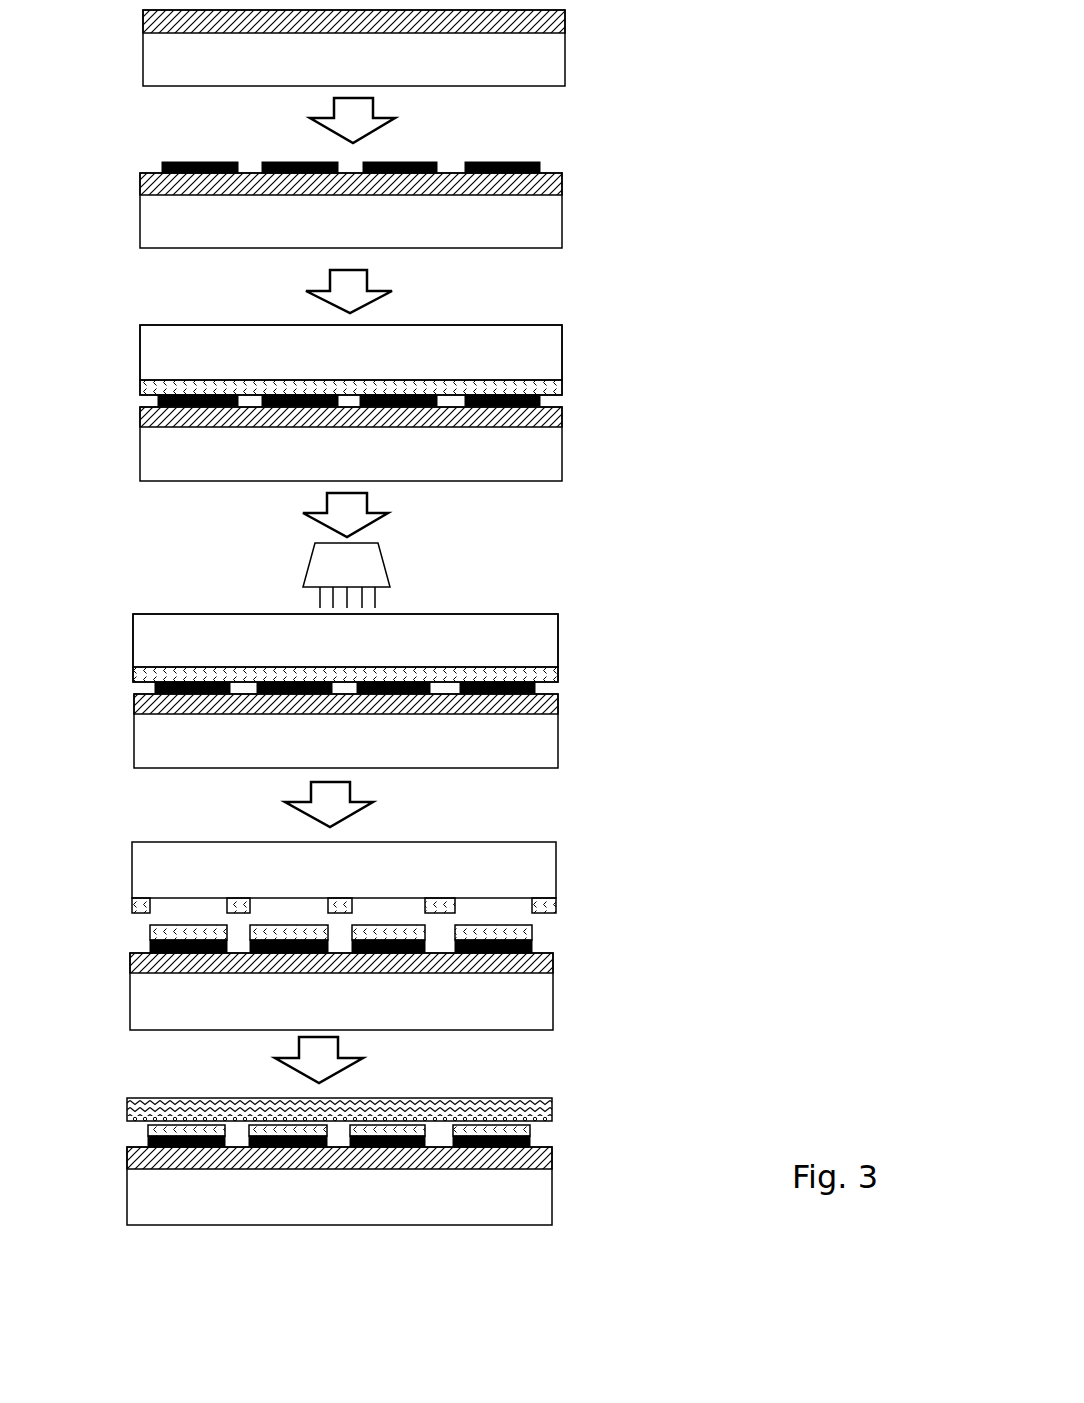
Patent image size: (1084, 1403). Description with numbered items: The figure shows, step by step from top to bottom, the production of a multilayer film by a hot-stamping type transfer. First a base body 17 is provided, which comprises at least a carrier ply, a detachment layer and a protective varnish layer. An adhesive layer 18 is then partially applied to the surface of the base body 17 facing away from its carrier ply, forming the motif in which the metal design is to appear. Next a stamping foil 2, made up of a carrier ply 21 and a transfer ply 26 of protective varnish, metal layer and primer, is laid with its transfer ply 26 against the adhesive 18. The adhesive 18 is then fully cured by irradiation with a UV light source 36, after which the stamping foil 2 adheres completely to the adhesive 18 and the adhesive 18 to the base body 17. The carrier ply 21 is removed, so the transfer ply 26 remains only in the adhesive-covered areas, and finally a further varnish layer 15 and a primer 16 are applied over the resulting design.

The stamping foil 2 is at (667, 305).
The further varnish layer 15 is at (552, 1100).
The primer 16 is at (405, 1090).
The base body 17 is at (594, 48).
The adhesive layer 18 is at (541, 170).
The carrier ply 21 is at (536, 348).
The transfer ply 26 is at (563, 378).
The UV light source 36 is at (357, 573).